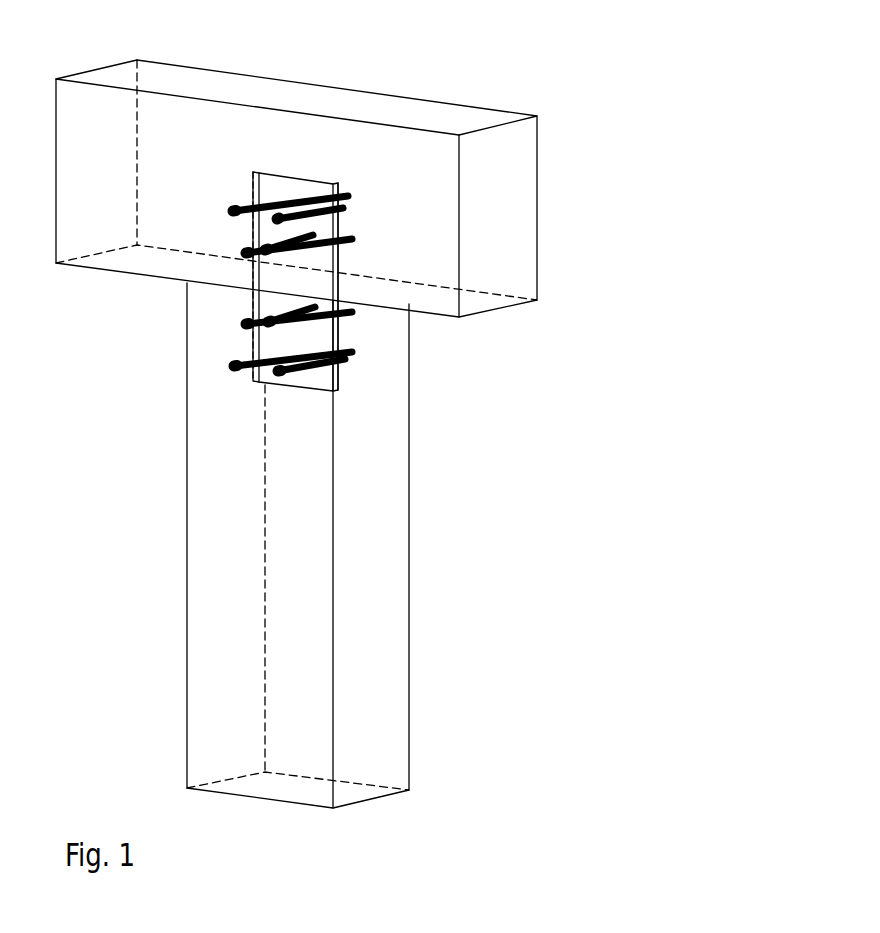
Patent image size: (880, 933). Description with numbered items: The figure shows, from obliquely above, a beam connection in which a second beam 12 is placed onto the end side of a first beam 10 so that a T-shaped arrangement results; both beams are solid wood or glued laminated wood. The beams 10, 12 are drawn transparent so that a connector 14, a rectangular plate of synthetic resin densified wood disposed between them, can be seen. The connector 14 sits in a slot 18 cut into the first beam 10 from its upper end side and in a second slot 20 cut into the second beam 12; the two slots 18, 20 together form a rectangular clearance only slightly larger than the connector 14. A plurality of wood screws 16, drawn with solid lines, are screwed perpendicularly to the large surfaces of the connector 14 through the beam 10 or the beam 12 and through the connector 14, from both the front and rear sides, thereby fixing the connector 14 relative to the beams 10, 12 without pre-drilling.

The first beam 10 is at (222, 555).
The second beam 12 is at (437, 137).
The connector 14 is at (258, 173).
The screws 16 is at (295, 197).
The slot 18 is at (252, 288).
The second slot 20 is at (337, 283).